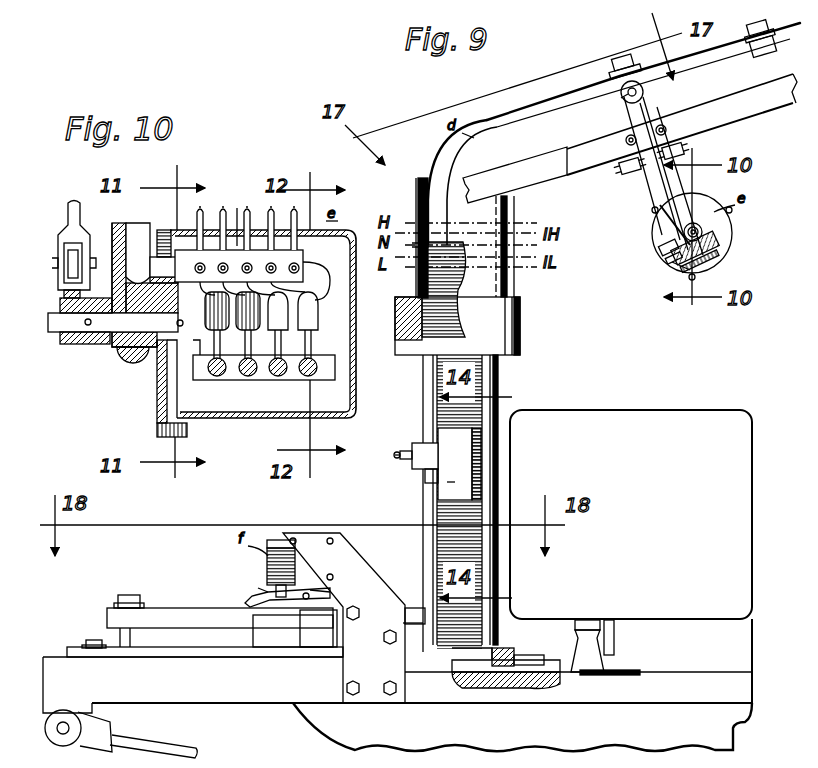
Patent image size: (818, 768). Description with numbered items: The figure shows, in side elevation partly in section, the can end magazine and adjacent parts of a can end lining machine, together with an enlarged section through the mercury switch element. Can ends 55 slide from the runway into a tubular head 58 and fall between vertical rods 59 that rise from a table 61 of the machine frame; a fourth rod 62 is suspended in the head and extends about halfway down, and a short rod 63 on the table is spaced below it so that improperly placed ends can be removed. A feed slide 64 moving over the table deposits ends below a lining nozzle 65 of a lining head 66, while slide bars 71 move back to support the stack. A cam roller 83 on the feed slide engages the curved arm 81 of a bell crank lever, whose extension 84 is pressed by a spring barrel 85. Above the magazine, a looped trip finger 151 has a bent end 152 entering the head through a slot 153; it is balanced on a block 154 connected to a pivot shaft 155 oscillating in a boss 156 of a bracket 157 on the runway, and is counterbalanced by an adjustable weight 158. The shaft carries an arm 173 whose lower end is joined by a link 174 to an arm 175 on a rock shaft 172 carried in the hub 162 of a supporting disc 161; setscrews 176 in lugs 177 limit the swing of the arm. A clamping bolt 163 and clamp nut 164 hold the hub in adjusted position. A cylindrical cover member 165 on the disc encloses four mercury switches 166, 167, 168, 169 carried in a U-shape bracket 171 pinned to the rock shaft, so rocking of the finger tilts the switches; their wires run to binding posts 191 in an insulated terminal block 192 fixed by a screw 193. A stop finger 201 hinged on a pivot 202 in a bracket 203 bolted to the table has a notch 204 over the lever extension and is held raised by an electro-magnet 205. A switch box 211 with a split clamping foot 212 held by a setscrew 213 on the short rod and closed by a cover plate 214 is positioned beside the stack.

In FIG. 9, the trip finger 151 is at (517, 113).
In FIG. 9, the bent forward end of trip finger 152 is at (447, 165).
In FIG. 9, the slot 153 is at (414, 190).
In FIG. 9, the block 154 is at (626, 82).
In FIG. 9, the pivot shaft 155 is at (644, 92).
In FIG. 9, the boss 156 is at (632, 104).
In FIG. 9, the bracket 157 is at (683, 189).
In FIG. 10, the bracket 157 is at (114, 229).
In FIG. 9, the adjustable weight 158 is at (762, 58).
In FIG. 9, the supporting disc 161 is at (718, 246).
In FIG. 10, the supporting disc 161 is at (160, 396).
In FIG. 10, the hub 162 is at (116, 350).
In FIG. 9, the clamping bolt 163 is at (715, 257).
In FIG. 10, the clamping bolt 163 is at (126, 378).
In FIG. 9, the clamp nut 164 is at (682, 266).
In FIG. 10, the cylindrical cover member 165 is at (246, 419).
In FIG. 10, the mercury switch 166 is at (216, 334).
In FIG. 10, the mercury switch 167 is at (248, 334).
In FIG. 10, the mercury switch 168 is at (277, 334).
In FIG. 10, the mercury switch 169 is at (307, 334).
In FIG. 10, the U-shape bracket 171 is at (250, 381).
In FIG. 9, the rock shaft 172 is at (712, 232).
In FIG. 10, the rock shaft 172 is at (57, 336).
In FIG. 9, the arm 173 is at (660, 180).
In FIG. 10, the arm 173 is at (72, 206).
In FIG. 9, the link 174 is at (662, 237).
In FIG. 10, the link 174 is at (66, 254).
In FIG. 9, the arm 175 is at (668, 253).
In FIG. 10, the arm 175 is at (62, 298).
In FIG. 9, the setscrews 176 is at (684, 150).
In FIG. 9, the lugs 177 is at (646, 184).
In FIG. 10, the binding posts 191 is at (262, 250).
In FIG. 10, the insulated terminal block 192 is at (237, 208).
In FIG. 10, the screw 193 is at (163, 229).
In FIG. 9, the tubular head 58 is at (522, 314).
In FIG. 9, the rods 59 is at (490, 386).
In FIG. 9, the can ends 55 is at (478, 412).
In FIG. 9, the rod 62 is at (426, 376).
In FIG. 9, the short rod 63 is at (422, 557).
In FIG. 9, the feed slide 64 is at (508, 678).
In FIG. 9, the table 61 is at (525, 686).
In FIG. 9, the lining nozzle 65 is at (600, 645).
In FIG. 9, the lining head 66 is at (631, 556).
In FIG. 9, the slide bars 71 is at (534, 657).
In FIG. 9, the curved lever arm 81 is at (180, 610).
In FIG. 9, the cam roller 83 is at (120, 600).
In FIG. 9, the extension 84 is at (262, 628).
In FIG. 9, the spring barrel 85 is at (318, 640).
In FIG. 9, the finger 201 is at (268, 594).
In FIG. 9, the pivot 202 is at (312, 597).
In FIG. 9, the bracket 203 is at (352, 566).
In FIG. 9, the notch 204 is at (247, 601).
In FIG. 9, the electro-magnet 205 is at (267, 567).
In FIG. 9, the casing or box 211 is at (455, 464).
In FIG. 9, the split clamping foot 212 is at (422, 453).
In FIG. 9, the setscrew 213 is at (398, 456).
In FIG. 9, the cover plate 214 is at (482, 458).